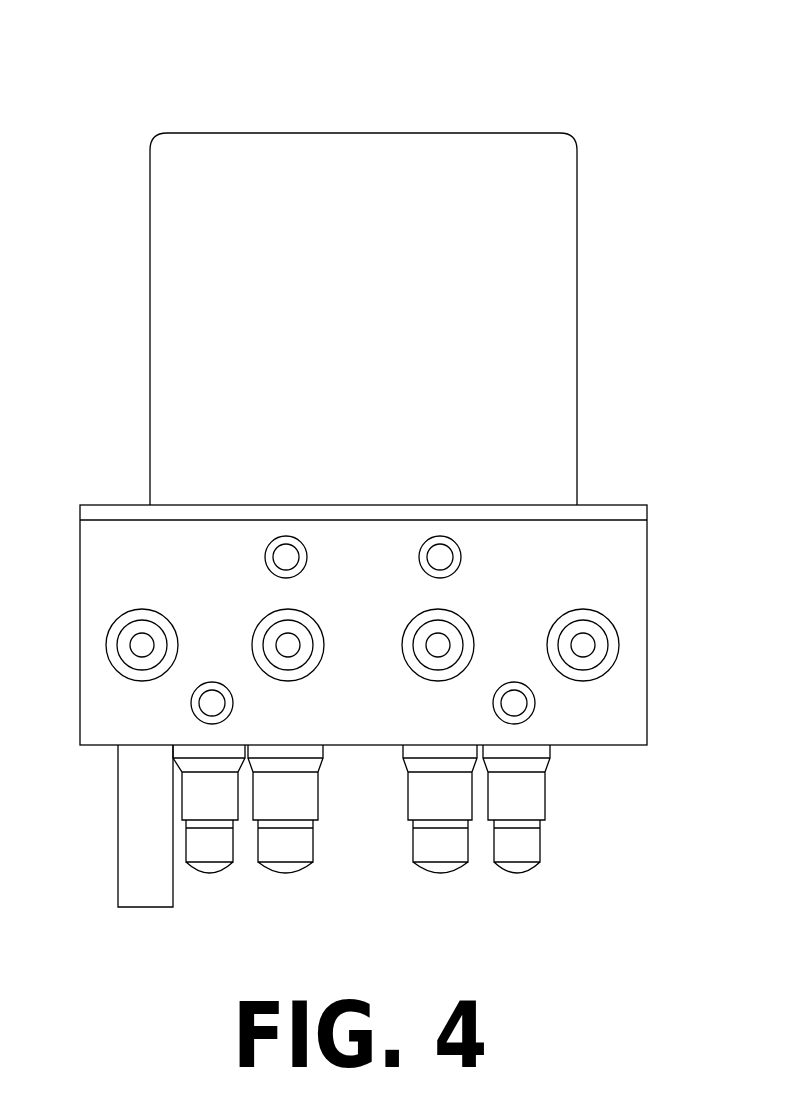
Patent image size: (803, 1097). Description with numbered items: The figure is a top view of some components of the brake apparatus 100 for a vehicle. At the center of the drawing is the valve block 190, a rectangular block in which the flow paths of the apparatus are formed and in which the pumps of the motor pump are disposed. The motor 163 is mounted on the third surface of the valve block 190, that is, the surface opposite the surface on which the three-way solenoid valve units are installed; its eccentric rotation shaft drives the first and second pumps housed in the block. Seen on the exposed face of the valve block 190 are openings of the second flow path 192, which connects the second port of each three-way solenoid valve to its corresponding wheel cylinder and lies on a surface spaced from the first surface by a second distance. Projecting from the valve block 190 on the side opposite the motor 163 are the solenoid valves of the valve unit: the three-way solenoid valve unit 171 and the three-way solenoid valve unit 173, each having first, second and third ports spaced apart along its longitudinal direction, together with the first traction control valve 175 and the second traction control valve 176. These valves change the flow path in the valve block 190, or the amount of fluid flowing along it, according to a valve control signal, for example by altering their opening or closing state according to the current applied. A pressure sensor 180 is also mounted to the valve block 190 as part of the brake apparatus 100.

The brake apparatus 100 is at (88, 33).
The motor 163 is at (438, 142).
The valve block 190 is at (647, 680).
The second flow path 192 is at (303, 633).
The pressure sensor 180 is at (118, 870).
The first traction control valve 175 is at (210, 872).
The 3-way solenoid valve unit 171 is at (288, 872).
The 3-way solenoid valve unit 173 is at (442, 872).
The second traction control valve 176 is at (518, 872).